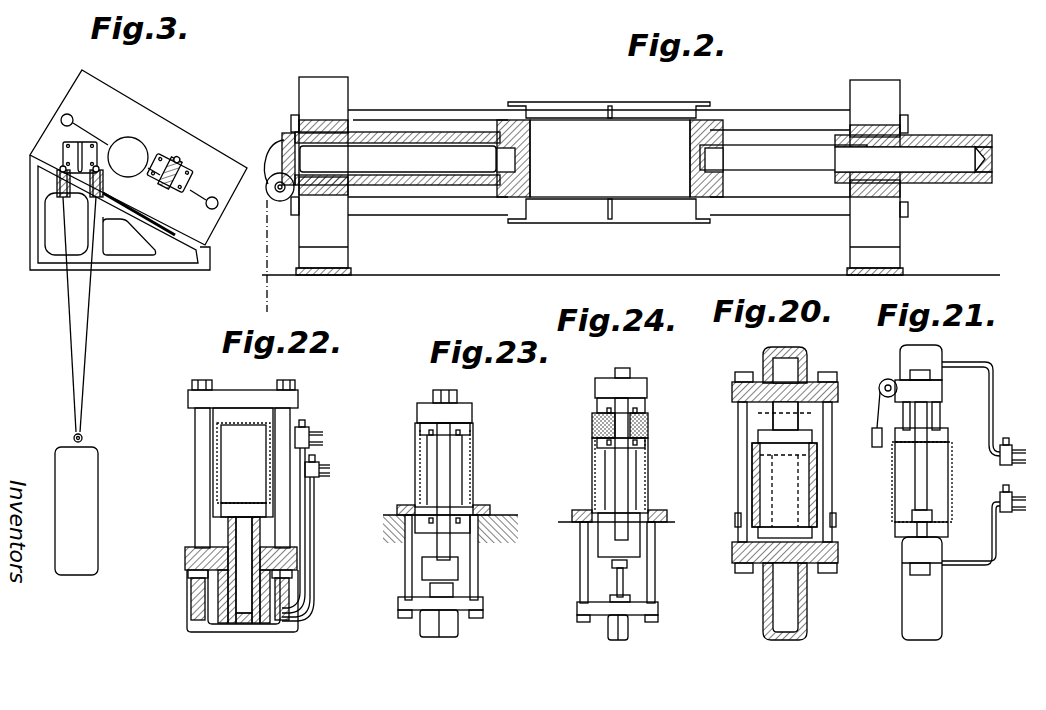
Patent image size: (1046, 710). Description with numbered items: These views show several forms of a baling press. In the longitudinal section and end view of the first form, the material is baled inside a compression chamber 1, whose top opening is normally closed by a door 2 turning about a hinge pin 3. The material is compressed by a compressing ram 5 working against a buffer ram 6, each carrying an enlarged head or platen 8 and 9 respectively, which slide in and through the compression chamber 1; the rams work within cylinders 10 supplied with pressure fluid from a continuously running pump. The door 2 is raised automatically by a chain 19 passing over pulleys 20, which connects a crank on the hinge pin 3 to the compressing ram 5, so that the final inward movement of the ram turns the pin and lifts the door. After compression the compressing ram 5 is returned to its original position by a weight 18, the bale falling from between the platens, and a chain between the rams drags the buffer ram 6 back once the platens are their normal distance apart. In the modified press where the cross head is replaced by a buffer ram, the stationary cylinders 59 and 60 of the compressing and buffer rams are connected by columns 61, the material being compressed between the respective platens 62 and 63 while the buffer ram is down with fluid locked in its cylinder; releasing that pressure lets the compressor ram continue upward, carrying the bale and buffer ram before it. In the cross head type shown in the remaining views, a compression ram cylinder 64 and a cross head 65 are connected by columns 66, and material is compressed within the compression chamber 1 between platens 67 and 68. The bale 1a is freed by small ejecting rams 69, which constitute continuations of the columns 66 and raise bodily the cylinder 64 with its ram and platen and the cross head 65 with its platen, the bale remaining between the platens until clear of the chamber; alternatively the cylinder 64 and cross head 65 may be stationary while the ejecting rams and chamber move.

In FIG. 22, the compression chamber 1 is at (227, 474).
In FIG. 23, the compression chamber 1 is at (474, 474).
In FIG. 20, the compression chamber 1 is at (806, 511).
In FIG. 21, the compression chamber 1 is at (940, 478).
In FIG. 24, the bale 1a is at (598, 426).
In FIG. 2, the door 2 is at (609, 162).
In FIG. 2, the hinge pin 3 is at (424, 166).
In FIG. 22, the compressing ram 5 is at (246, 606).
In FIG. 24, the compressing ram 5 is at (612, 494).
In FIG. 20, the compressing ram 5 is at (785, 516).
In FIG. 2, the buffer ram 6 is at (790, 165).
In FIG. 20, the buffer ram 6 is at (780, 418).
In FIG. 21, the buffer ram 6 is at (932, 410).
In FIG. 2, the platen of compressing ram 8 is at (530, 181).
In FIG. 2, the platen of buffer ram 9 is at (690, 181).
In FIG. 2, the cylinders 10 is at (960, 183).
In FIG. 3, the weight 18 is at (95, 478).
In FIG. 3, the chain 19 is at (71, 306).
In FIG. 2, the chain 19 is at (270, 300).
In FIG. 3, the pulleys 20 is at (57, 185).
In FIG. 2, the pulleys 20 is at (270, 196).
In FIG. 20, the cylinder of compressing ram 59 is at (806, 616).
In FIG. 21, the cylinder of compressing ram 59 is at (922, 588).
In FIG. 20, the cylinder of buffer ram 60 is at (805, 365).
In FIG. 21, the cylinder of buffer ram 60 is at (905, 356).
In FIG. 20, the columns 61 is at (742, 494).
In FIG. 20, the platen of compressing ram 62 is at (806, 530).
In FIG. 21, the platen of compressing ram 62 is at (940, 531).
In FIG. 20, the platen of buffer ram 63 is at (808, 438).
In FIG. 21, the platen of buffer ram 63 is at (940, 435).
In FIG. 22, the compression ram cylinder 64 is at (228, 624).
In FIG. 23, the compression ram cylinder 64 is at (425, 623).
In FIG. 24, the compression ram cylinder 64 is at (605, 588).
In FIG. 22, the cross head 65 is at (218, 398).
In FIG. 23, the cross head 65 is at (417, 410).
In FIG. 24, the cross head 65 is at (603, 388).
In FIG. 22, the columns 66 is at (195, 533).
In FIG. 23, the columns 66 is at (448, 457).
In FIG. 24, the columns 66 is at (620, 483).
In FIG. 22, the platen 67 is at (245, 511).
In FIG. 23, the platen 67 is at (418, 506).
In FIG. 24, the platen 67 is at (600, 447).
In FIG. 22, the platen 68 is at (249, 414).
In FIG. 23, the platen 68 is at (422, 431).
In FIG. 24, the platen 68 is at (605, 405).
In FIG. 22, the ejecting rams 69 is at (197, 605).
In FIG. 24, the ejecting rams 69 is at (620, 578).